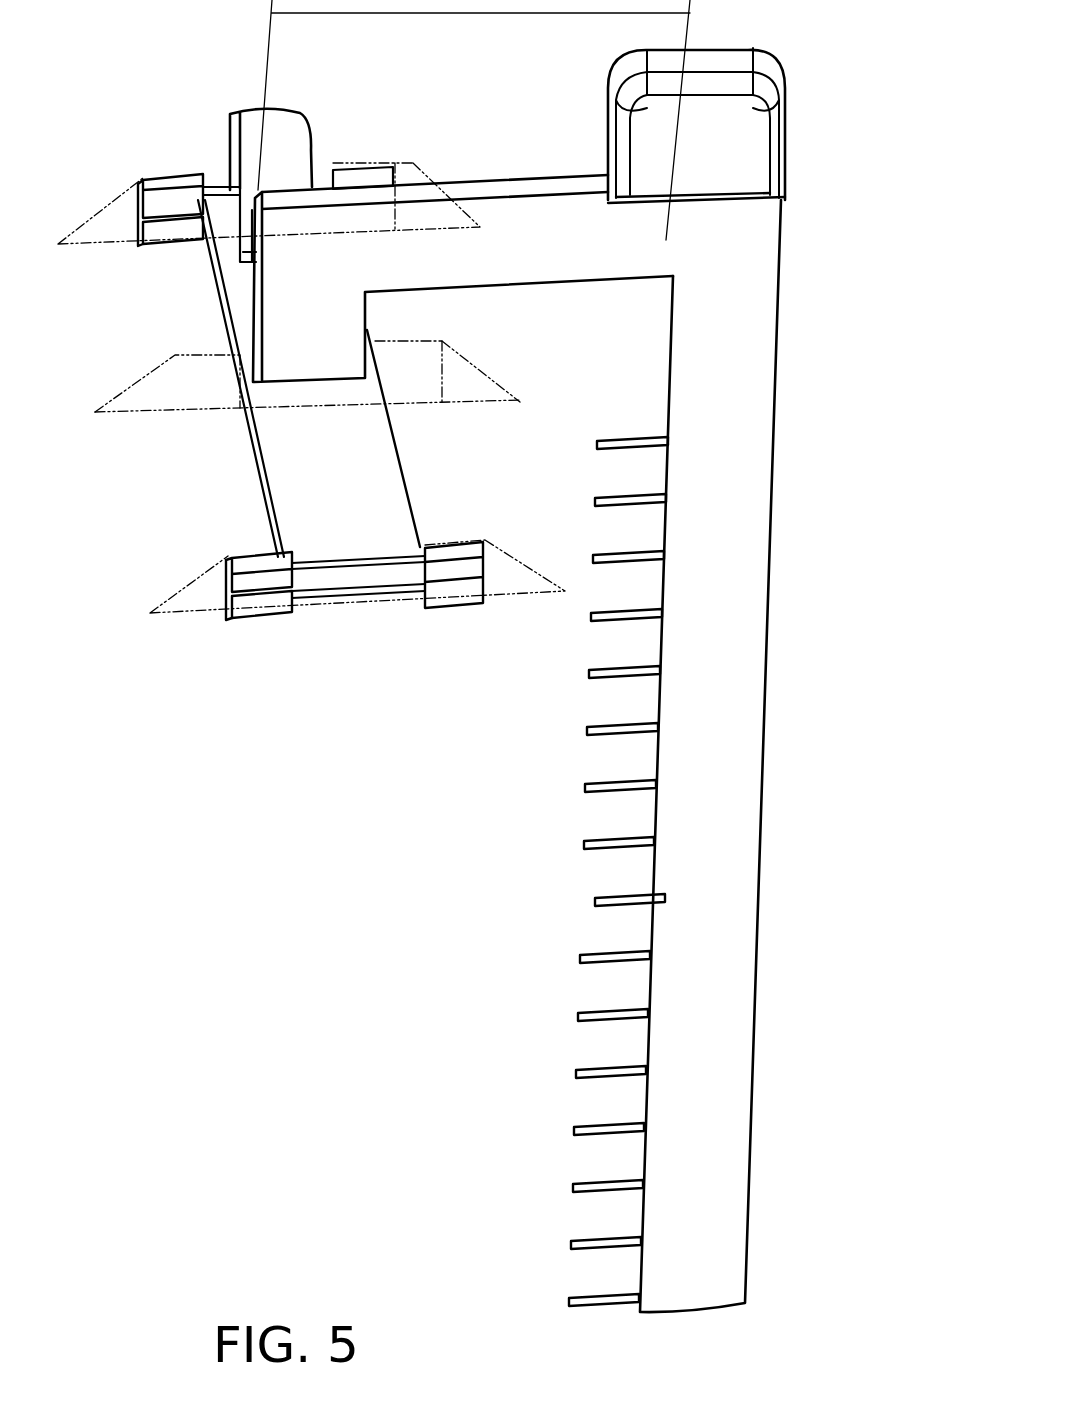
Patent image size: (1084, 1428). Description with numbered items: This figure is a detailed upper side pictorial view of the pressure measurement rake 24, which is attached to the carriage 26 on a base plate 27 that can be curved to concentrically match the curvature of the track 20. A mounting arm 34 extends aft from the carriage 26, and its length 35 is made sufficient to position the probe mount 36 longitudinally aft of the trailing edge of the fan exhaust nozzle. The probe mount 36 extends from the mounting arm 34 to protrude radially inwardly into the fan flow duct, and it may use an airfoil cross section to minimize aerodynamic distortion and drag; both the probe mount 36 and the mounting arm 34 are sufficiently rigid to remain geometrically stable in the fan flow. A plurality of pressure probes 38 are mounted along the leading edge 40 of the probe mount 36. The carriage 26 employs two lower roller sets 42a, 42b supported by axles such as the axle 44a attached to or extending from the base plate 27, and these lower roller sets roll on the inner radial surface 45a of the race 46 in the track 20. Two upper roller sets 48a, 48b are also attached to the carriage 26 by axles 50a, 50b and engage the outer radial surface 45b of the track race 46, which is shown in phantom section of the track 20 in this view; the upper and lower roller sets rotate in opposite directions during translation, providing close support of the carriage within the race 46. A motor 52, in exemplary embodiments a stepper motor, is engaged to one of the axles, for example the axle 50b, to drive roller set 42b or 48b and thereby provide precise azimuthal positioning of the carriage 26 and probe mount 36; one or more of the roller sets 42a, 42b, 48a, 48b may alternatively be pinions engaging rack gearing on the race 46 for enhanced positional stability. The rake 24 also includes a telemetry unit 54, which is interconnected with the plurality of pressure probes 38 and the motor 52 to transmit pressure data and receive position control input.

The track 20 is at (485, 370).
The pressure measurement rake 24 is at (676, 756).
The carriage 26 is at (253, 447).
The base plate 27 is at (368, 487).
The mounting arm 34 is at (541, 218).
The length 35 is at (460, 13).
The probe mount 36 is at (715, 773).
The pressure probes 38 is at (600, 847).
The leading edge 40 is at (662, 693).
The lower roller set 42a is at (272, 604).
The lower roller set 42b is at (168, 228).
The axle 44a is at (352, 600).
The inner radial surface 45a is at (215, 413).
The outer radial surface 45b is at (213, 356).
The race 46 is at (415, 378).
The upper roller set 48a is at (256, 562).
The upper roller set 48b is at (171, 183).
The axle 50a is at (343, 556).
The axle 50b is at (220, 187).
The motor 52 is at (288, 115).
The telemetry unit 54 is at (755, 118).